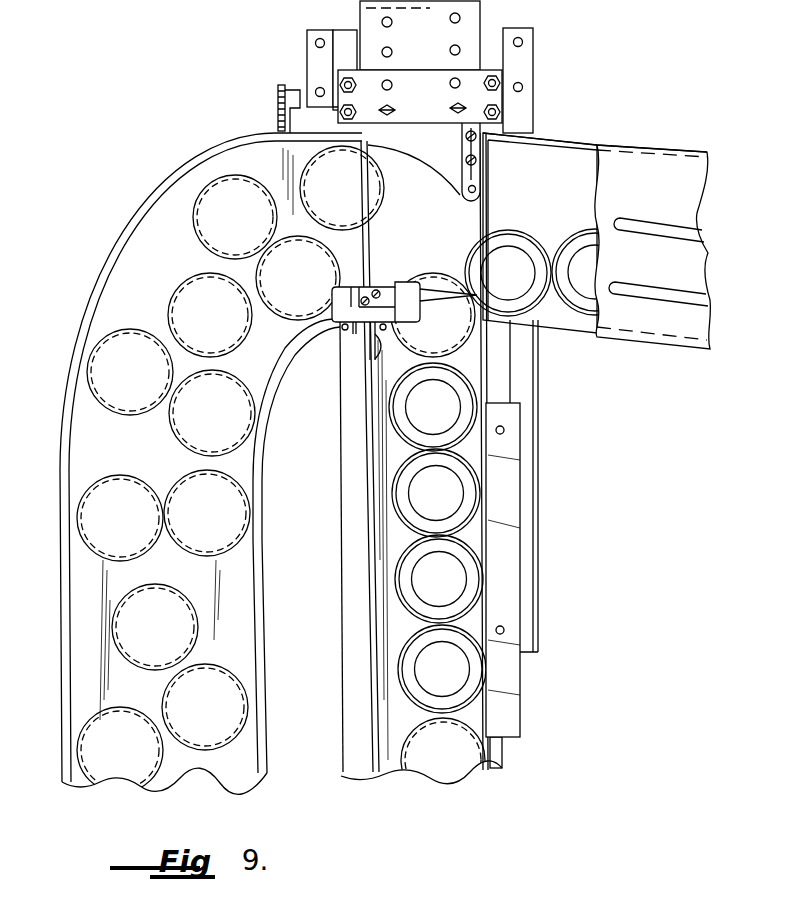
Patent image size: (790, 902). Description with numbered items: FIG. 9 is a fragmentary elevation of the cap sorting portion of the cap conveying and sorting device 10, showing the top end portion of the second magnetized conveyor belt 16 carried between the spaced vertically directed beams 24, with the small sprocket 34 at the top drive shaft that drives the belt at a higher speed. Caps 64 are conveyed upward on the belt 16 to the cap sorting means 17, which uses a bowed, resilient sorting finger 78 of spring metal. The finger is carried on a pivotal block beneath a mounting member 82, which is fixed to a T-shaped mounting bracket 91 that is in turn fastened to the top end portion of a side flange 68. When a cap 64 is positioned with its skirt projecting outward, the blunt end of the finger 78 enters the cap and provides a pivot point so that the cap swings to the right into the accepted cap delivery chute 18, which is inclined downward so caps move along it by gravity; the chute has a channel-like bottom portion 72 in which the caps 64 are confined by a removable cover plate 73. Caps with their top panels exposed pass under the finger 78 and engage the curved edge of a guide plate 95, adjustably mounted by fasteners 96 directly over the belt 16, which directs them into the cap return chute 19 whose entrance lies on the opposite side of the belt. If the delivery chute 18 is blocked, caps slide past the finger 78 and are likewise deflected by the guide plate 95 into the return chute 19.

The cap conveying and sorting device 10 is at (214, 114).
The second magnetized conveyor belt 16 is at (417, 212).
The cap sorting means 17 is at (406, 282).
The cap delivery chute means 18 is at (568, 136).
The cap return chute means 19 is at (155, 205).
The vertically directed beams 24 is at (530, 402).
The sprocket 34 is at (277, 88).
The caps 64 is at (192, 239).
The side flange 68 is at (376, 459).
The channel-like bottom portion 72 is at (545, 200).
The removable cover plate 73 is at (700, 183).
The resilient sorting finger 78 is at (446, 280).
The mounting member 82 is at (346, 333).
The T-shaped mounting bracket 91 is at (372, 350).
The guide plate 95 is at (409, 153).
The fasteners 96 is at (484, 150).